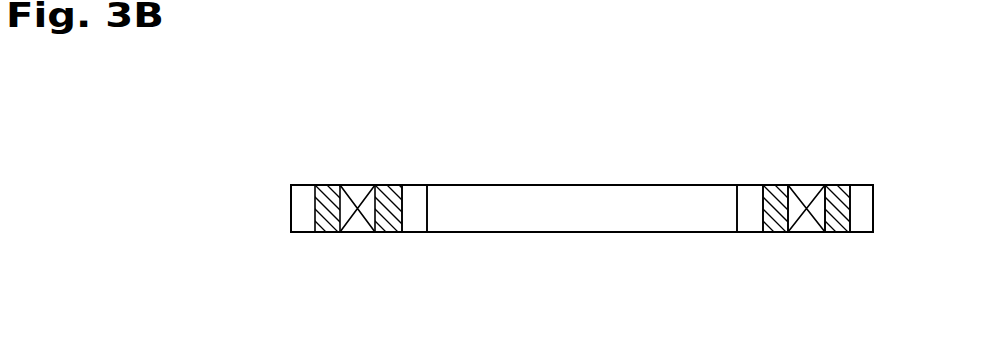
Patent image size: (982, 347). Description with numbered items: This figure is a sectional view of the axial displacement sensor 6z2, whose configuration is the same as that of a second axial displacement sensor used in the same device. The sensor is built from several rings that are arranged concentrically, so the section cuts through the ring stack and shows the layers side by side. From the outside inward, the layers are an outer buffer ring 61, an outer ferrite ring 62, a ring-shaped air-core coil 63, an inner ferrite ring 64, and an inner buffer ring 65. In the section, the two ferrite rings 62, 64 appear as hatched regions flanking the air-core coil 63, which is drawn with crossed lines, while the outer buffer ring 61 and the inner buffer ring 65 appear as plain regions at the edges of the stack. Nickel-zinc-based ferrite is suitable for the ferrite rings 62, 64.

The axial displacement sensor 6z2 is at (415, 184).
The outer buffer ring 61 is at (860, 193).
The outer ferrite ring 62 is at (837, 222).
The ring-shaped air-core coil 63 is at (803, 193).
The inner ferrite ring 64 is at (778, 222).
The inner buffer ring 65 is at (748, 197).